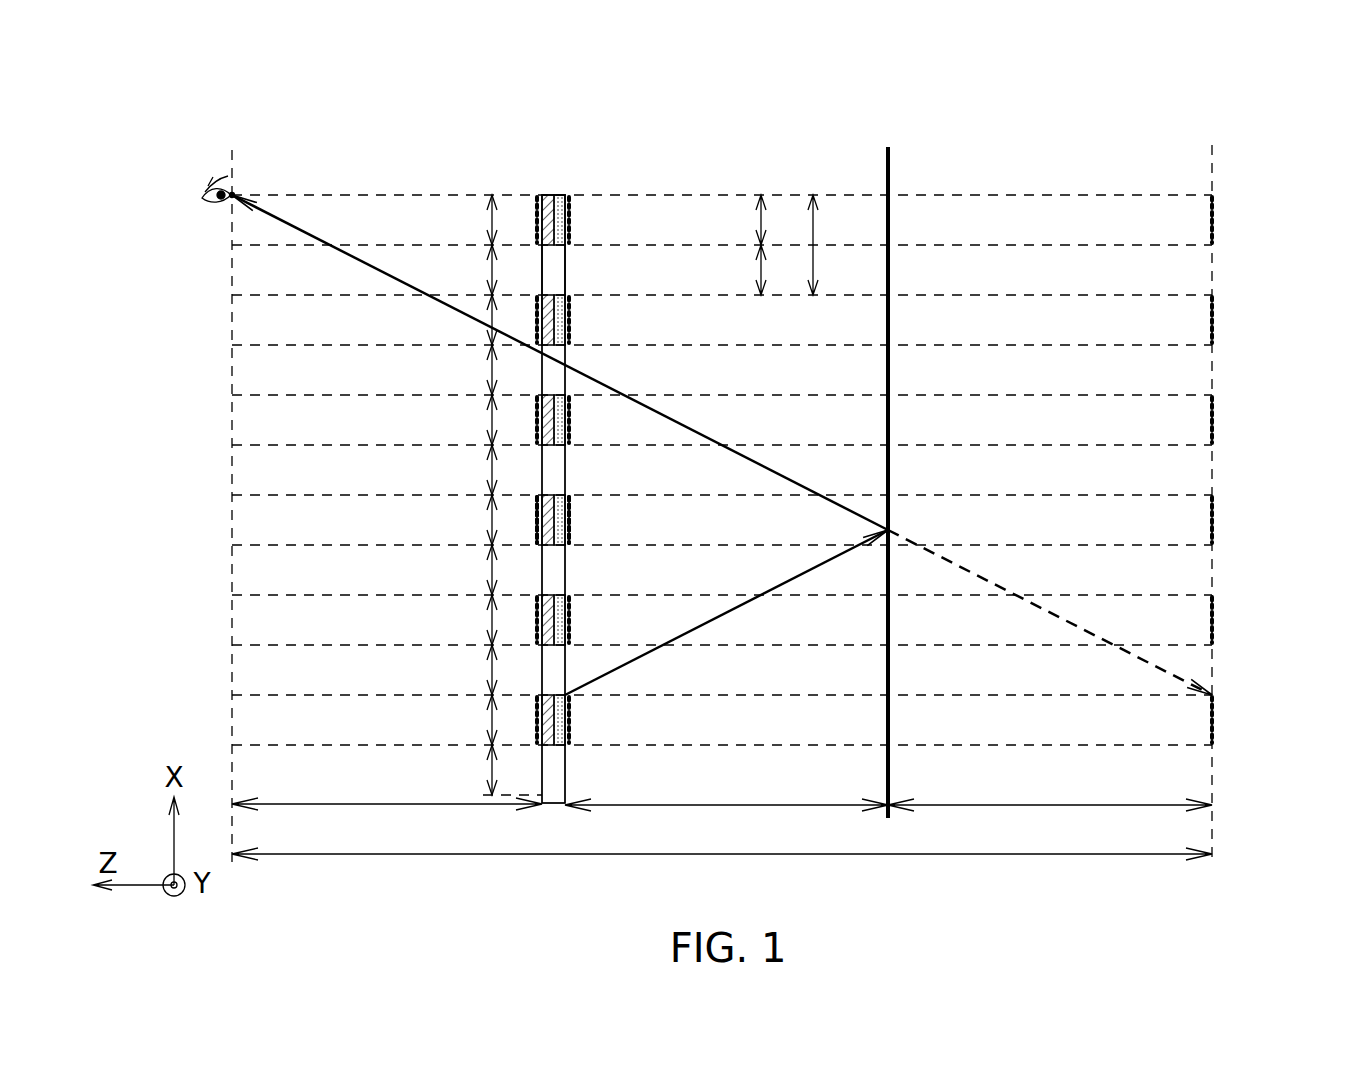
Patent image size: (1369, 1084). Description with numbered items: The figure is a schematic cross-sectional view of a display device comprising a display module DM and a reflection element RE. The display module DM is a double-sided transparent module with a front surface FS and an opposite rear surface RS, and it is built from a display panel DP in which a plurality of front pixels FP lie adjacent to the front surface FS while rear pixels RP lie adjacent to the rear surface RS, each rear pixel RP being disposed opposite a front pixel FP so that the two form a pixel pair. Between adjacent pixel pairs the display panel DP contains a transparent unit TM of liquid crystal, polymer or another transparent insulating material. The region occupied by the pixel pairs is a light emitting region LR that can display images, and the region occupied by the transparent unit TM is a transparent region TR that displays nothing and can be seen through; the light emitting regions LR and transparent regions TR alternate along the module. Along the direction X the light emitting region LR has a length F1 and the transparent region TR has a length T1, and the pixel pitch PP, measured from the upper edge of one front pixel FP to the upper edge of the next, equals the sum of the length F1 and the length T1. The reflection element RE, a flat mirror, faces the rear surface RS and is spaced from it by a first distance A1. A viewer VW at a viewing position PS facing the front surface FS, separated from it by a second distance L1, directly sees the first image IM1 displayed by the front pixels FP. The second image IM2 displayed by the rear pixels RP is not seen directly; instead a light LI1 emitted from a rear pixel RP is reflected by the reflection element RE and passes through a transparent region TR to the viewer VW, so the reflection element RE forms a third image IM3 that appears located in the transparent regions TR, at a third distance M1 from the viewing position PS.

The viewer VW is at (222, 178).
The viewing position PS is at (238, 190).
The light LI1 is at (371, 262).
The light emitting region LR is at (471, 470).
The transparent region TR is at (470, 520).
The display module DM is at (556, 179).
The display panel DP is at (542, 806).
The front pixel FP is at (548, 193).
The rear pixel RP is at (562, 193).
The front surface FS is at (537, 212).
The rear surface RS is at (569, 212).
The transparent unit TM is at (557, 265).
The length of the light emitting region F1 is at (743, 220).
The length of the transparent region T1 is at (742, 270).
The pixel pitch PP is at (831, 245).
The reflection element RE is at (893, 163).
The first image IM1 is at (536, 516).
The second image IM2 is at (572, 520).
The third image IM3 is at (1215, 222).
The second distance L1 is at (387, 792).
The first distance A1 is at (888, 792).
The third distance M1 is at (722, 842).